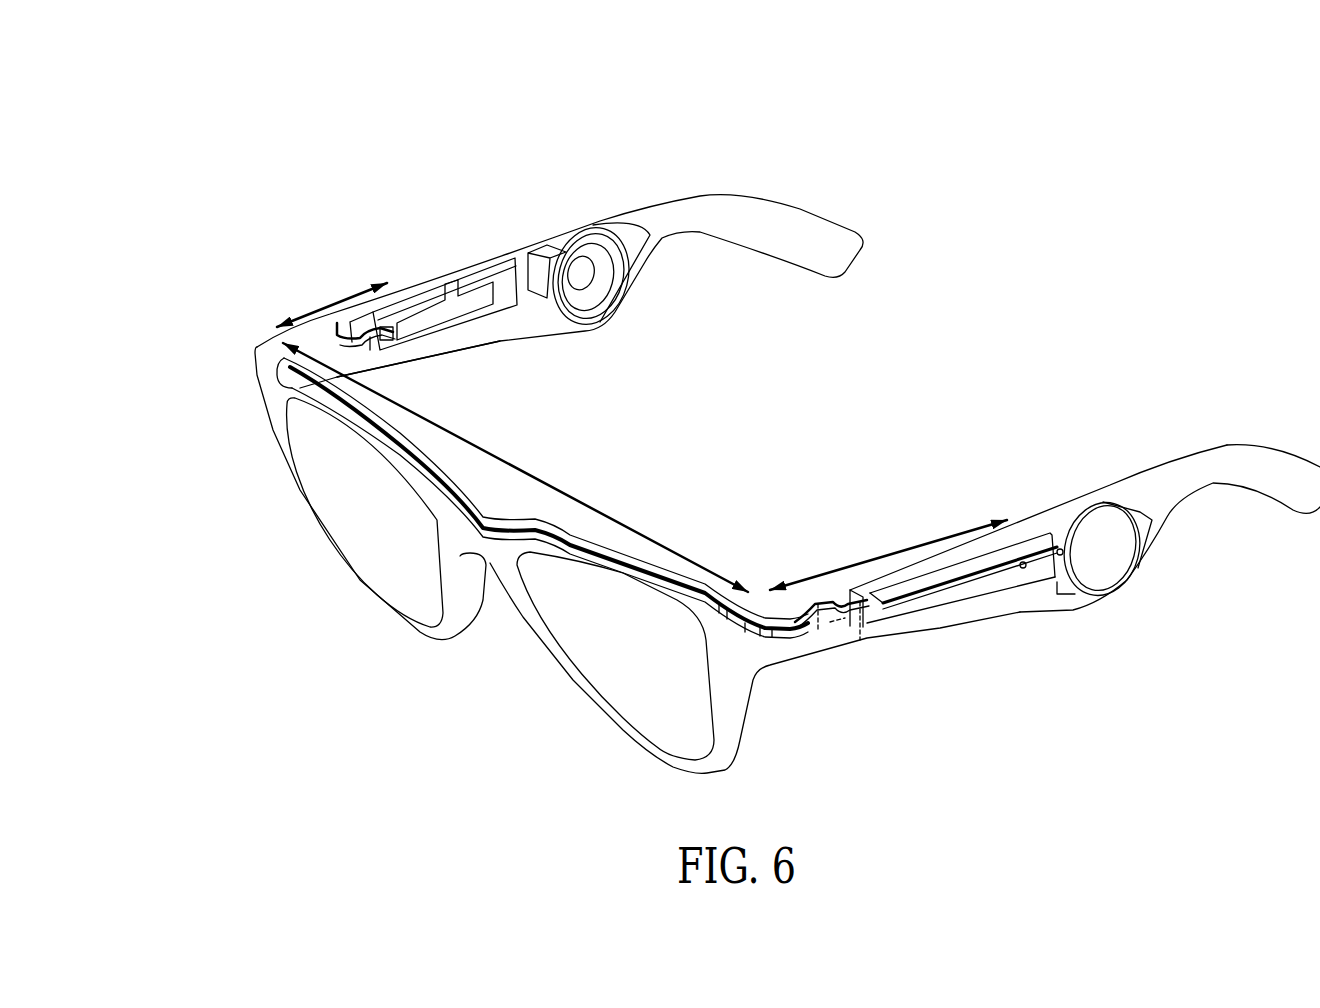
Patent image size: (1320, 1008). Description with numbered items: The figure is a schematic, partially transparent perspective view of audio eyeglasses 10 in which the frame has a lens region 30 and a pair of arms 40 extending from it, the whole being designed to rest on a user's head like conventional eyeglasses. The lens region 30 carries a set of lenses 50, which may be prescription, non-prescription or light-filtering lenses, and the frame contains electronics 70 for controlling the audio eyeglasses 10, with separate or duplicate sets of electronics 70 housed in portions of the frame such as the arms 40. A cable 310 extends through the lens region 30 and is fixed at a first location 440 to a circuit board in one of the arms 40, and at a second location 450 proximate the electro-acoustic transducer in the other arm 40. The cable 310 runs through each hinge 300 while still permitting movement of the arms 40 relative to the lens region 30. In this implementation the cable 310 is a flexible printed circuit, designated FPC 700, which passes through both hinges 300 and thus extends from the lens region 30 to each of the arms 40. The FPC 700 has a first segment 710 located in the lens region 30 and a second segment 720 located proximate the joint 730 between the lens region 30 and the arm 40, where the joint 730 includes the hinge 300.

The audio eyeglasses 10 is at (297, 130).
The lens region 30 is at (275, 503).
The arms 40 is at (788, 177).
The lenses 50 is at (368, 547).
The electronics 70 is at (572, 252).
The hinge 300 is at (352, 273).
The cable 310 is at (268, 388).
The first location 440 is at (417, 260).
The second location 450 is at (1043, 517).
The FPC 700 is at (980, 590).
The first segment 710 is at (515, 467).
The second segment 720 is at (642, 434).
The joint 730 is at (282, 290).